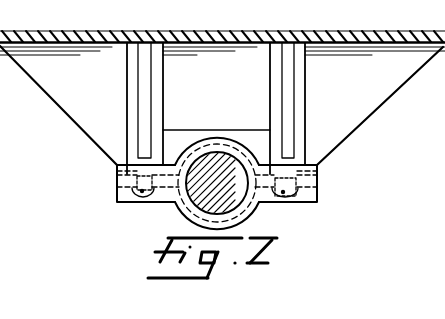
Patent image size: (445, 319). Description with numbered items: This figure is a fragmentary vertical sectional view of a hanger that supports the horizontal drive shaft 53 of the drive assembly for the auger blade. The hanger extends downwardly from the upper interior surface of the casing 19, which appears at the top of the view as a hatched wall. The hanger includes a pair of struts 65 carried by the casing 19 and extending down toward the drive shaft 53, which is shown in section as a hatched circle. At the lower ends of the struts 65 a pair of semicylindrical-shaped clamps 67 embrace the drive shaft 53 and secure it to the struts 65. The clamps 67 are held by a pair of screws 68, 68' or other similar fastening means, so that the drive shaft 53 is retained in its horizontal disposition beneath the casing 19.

The casing 19 is at (118, 32).
The struts 65 is at (275, 92).
The horizontal drive shaft 53 is at (220, 170).
The semicylindrical-shaped clamps 67 is at (117, 170).
The screws 68 is at (295, 207).
The screws 68' is at (128, 206).